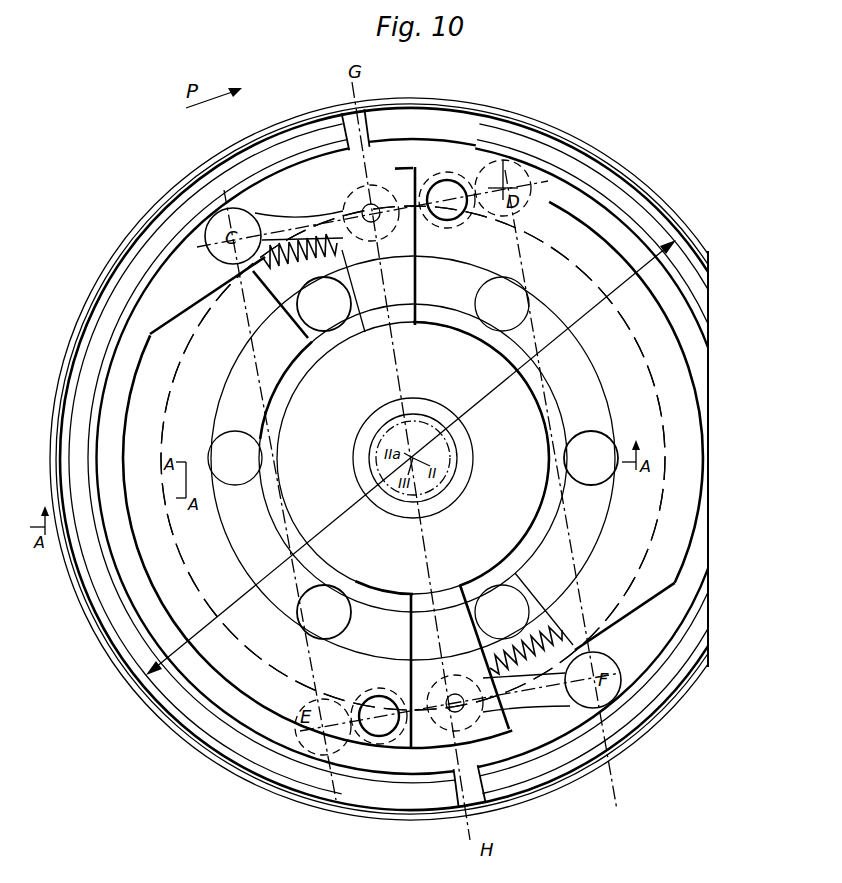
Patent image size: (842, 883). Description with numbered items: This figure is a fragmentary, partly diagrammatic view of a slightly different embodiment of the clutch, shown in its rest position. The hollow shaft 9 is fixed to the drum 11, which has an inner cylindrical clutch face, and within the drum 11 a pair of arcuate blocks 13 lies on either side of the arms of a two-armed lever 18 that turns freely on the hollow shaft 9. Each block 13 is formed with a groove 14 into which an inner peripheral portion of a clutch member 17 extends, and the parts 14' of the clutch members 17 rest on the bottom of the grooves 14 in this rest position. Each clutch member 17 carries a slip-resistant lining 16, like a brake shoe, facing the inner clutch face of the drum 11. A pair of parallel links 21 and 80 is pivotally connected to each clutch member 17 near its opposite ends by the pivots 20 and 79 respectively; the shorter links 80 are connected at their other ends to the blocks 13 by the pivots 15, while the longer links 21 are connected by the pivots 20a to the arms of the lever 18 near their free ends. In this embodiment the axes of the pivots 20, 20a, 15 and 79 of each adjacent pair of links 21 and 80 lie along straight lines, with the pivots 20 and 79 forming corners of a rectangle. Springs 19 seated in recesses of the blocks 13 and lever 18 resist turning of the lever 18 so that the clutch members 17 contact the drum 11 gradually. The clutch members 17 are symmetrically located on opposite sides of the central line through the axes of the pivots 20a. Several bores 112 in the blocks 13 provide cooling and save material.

The hollow shaft 9 is at (428, 432).
The drum 11 is at (180, 188).
The arcuate blocks 13 is at (413, 458).
The grooves 14 is at (413, 458).
The parts of the clutch members 14' is at (406, 458).
The pivots 15 is at (447, 196).
The lining 16 is at (148, 242).
The clutch members 17 is at (146, 668).
The two-armed lever 18 is at (378, 258).
The springs 19 is at (412, 454).
The pivots 20 is at (217, 252).
The pivots 20a is at (363, 192).
The links 21 is at (290, 217).
The pivots 79 is at (507, 164).
The links 80 is at (475, 176).
The bores 112 is at (413, 458).